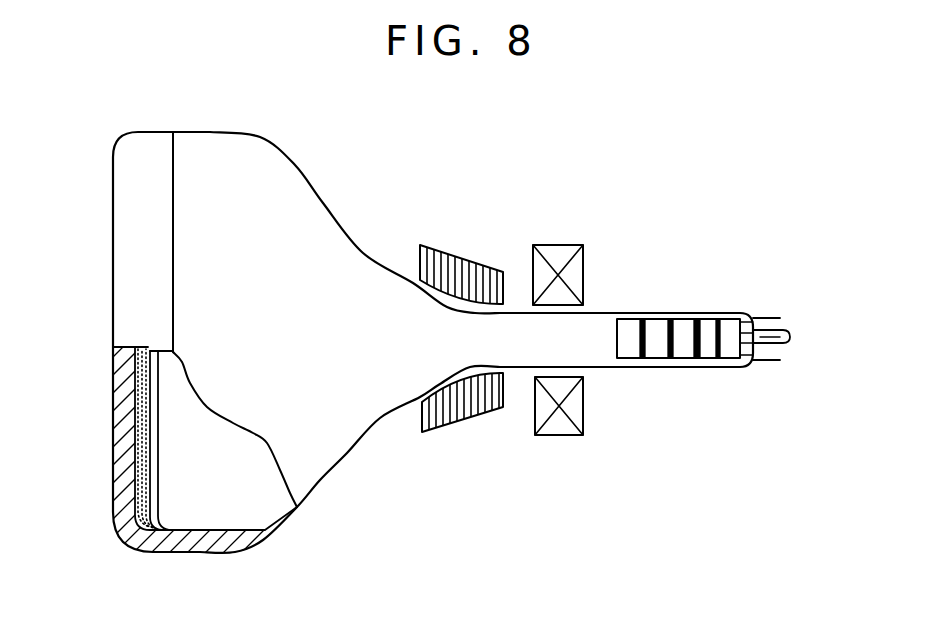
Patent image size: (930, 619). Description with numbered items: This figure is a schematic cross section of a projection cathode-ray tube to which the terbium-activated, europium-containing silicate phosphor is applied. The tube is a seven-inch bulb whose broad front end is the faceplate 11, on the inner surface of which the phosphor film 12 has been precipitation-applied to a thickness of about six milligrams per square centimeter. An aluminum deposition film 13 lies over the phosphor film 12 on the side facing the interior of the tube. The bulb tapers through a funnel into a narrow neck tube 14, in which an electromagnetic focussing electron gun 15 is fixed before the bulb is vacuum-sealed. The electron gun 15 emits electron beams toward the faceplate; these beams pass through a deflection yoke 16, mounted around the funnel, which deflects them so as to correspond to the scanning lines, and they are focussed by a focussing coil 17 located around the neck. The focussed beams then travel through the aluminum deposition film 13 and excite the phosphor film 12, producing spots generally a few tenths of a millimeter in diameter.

The faceplate 11 is at (113, 418).
The phosphor film 12 is at (137, 505).
The aluminum deposition film 13 is at (158, 478).
The neck tube 14 is at (633, 368).
The electron gun 15 is at (700, 358).
The deflection yoke 16 is at (465, 260).
The focussing coil 17 is at (560, 245).